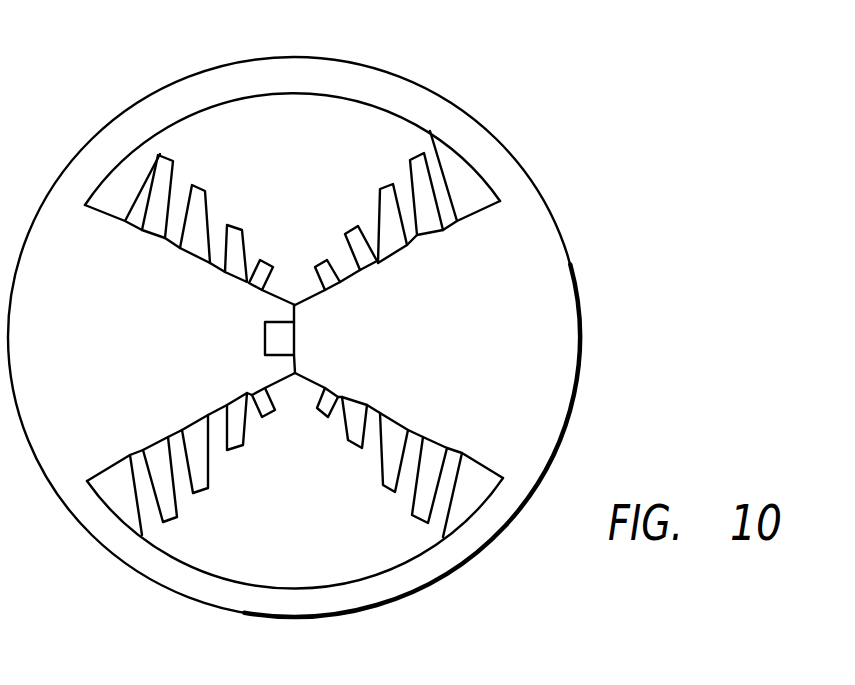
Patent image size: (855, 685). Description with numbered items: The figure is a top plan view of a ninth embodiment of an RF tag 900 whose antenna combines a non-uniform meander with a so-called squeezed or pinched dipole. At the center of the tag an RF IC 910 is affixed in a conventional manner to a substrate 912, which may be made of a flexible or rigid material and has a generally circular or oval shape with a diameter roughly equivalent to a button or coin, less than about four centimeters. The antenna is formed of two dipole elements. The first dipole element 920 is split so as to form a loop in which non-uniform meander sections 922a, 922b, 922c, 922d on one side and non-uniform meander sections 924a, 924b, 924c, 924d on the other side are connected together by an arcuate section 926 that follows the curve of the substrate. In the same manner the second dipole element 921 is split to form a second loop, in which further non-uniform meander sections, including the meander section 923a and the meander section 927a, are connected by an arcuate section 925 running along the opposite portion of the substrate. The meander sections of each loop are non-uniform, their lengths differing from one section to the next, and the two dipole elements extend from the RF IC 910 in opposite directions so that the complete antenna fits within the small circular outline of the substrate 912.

The RF tag 900 is at (52, 119).
The RF IC 910 is at (265, 342).
The substrate 912 is at (563, 240).
The first dipole element 920 is at (360, 271).
The second dipole element 921 is at (308, 378).
The non-uniform meander section 922a is at (314, 266).
The non-uniform meander section 922b is at (358, 226).
The non-uniform meander section 922c is at (382, 188).
The non-uniform meander section 922d is at (428, 133).
The non-uniform meander section 923a is at (317, 409).
The non-uniform meander section 924a is at (270, 261).
The non-uniform meander section 924b is at (238, 229).
The non-uniform meander section 924c is at (194, 185).
The non-uniform meander section 924d is at (167, 154).
The arcuate section 925 is at (365, 583).
The arcuate section 926 is at (292, 92).
The non-uniform meander section 927a is at (262, 417).